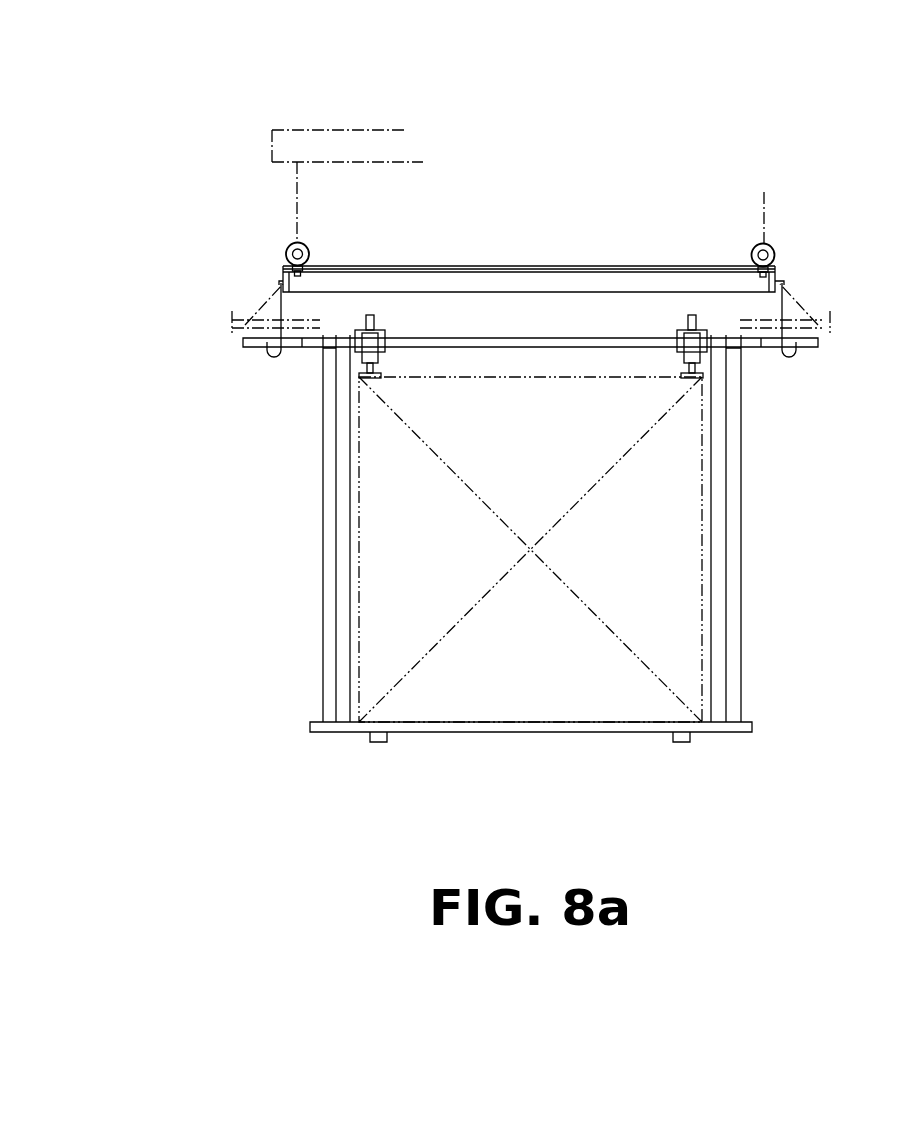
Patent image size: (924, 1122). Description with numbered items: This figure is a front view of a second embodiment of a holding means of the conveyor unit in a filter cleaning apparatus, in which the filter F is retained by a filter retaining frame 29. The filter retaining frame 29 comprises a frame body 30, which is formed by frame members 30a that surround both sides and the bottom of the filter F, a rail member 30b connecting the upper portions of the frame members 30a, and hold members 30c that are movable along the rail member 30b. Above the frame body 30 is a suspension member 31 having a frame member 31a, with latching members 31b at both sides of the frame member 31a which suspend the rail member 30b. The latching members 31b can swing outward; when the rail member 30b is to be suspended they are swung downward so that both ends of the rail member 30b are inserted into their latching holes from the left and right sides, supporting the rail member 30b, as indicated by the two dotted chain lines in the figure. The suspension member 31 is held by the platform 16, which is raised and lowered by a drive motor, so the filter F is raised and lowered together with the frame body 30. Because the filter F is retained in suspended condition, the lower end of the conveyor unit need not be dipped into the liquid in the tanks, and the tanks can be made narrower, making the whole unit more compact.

The platform 16 is at (290, 130).
The filter retaining frame 29 is at (478, 212).
The suspension member 31 is at (665, 265).
The frame member 31a is at (582, 265).
The latching member 31b is at (278, 310).
The frame body 30 is at (740, 505).
The frame member 30a is at (733, 682).
The rail member 30b is at (820, 342).
The hold member 30c is at (362, 358).
The filter F is at (547, 685).